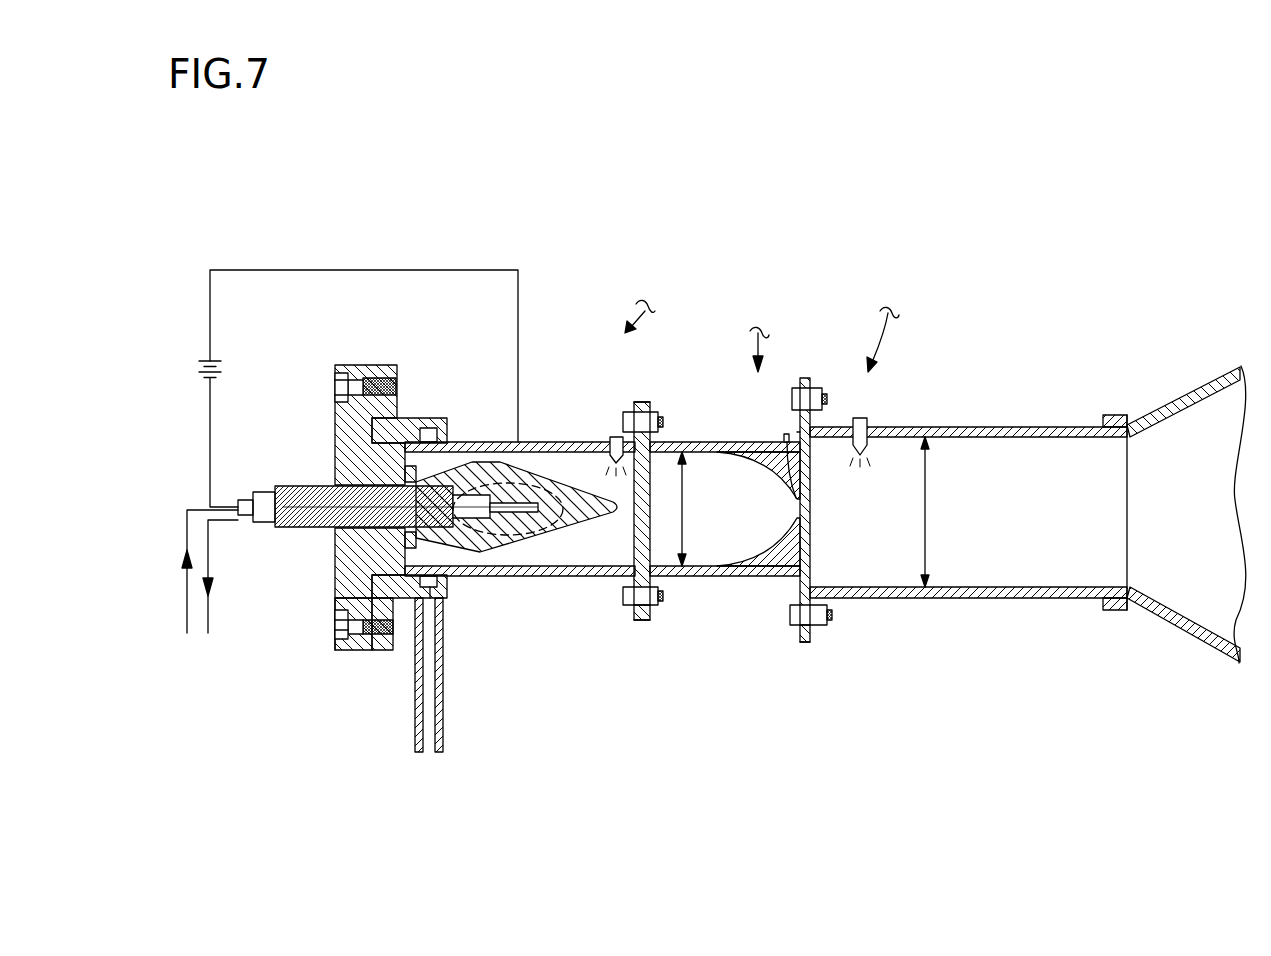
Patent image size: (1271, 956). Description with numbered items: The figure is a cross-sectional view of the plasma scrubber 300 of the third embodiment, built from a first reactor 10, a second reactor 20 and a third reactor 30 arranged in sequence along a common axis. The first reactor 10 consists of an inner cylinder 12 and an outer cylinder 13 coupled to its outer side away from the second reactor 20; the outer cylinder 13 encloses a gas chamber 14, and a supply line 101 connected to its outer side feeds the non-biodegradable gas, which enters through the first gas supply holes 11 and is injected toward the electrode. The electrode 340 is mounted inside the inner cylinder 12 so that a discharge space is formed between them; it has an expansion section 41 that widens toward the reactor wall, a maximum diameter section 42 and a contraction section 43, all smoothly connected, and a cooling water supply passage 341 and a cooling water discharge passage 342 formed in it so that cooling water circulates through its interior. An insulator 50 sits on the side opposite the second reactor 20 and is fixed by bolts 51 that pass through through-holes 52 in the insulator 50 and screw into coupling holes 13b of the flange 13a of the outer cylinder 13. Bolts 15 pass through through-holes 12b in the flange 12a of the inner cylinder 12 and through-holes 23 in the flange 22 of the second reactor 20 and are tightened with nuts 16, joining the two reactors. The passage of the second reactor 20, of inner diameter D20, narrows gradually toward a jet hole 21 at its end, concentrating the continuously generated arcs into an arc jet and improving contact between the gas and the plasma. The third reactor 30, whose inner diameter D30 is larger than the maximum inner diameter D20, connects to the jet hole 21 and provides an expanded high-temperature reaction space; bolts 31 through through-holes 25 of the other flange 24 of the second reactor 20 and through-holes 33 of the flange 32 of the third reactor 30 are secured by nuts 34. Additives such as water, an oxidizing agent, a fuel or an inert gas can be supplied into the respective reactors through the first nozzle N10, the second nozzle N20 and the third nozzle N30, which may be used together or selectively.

The plasma scrubber 300 is at (737, 232).
The first reactor 10 is at (622, 273).
The outer cylinder 13 is at (445, 418).
The inner cylinder 12 is at (535, 442).
The flange of the inner cylinder 12a is at (640, 623).
The through-holes of the inner cylinder flange 12b is at (611, 437).
The through-holes of the second reactor flange 23 is at (658, 412).
The flange of the second reactor 22 is at (648, 620).
The bolts 15 is at (628, 608).
The nuts 16 is at (660, 607).
The first nozzle N10 is at (614, 460).
The second reactor 20 is at (692, 442).
The jet hole 21 is at (795, 510).
The second nozzle N20 is at (784, 438).
The through-holes of the second reactor's other flange 25 is at (797, 436).
The another flange of the second reactor 24 is at (805, 645).
The through-holes of the third reactor flange 33 is at (822, 400).
The flange of the third reactor 32 is at (815, 640).
The bolts 31 is at (793, 630).
The nuts 34 is at (827, 632).
The third reactor 30 is at (978, 427).
The third nozzle N30 is at (867, 447).
The inner diameter of the second reactor D20 is at (700, 509).
The diameter of third tube D30 is at (943, 512).
The insulator 50 is at (335, 553).
The bolts 51 is at (335, 621).
The through-holes of the insulator 52 is at (337, 628).
The flange of the outer cylinder 13a is at (380, 650).
The coupling holes 13b is at (394, 634).
The gas chamber 14 is at (372, 580).
The first gas supply holes 11 is at (446, 548).
The expansion section 41 is at (453, 553).
The maximum diameter section 42 is at (506, 560).
The contraction section 43 is at (565, 530).
The electrode 340 is at (575, 655).
The cooling water supply passage 341 is at (187, 526).
The cooling water discharge passage 342 is at (208, 563).
The supply line 101 is at (443, 727).